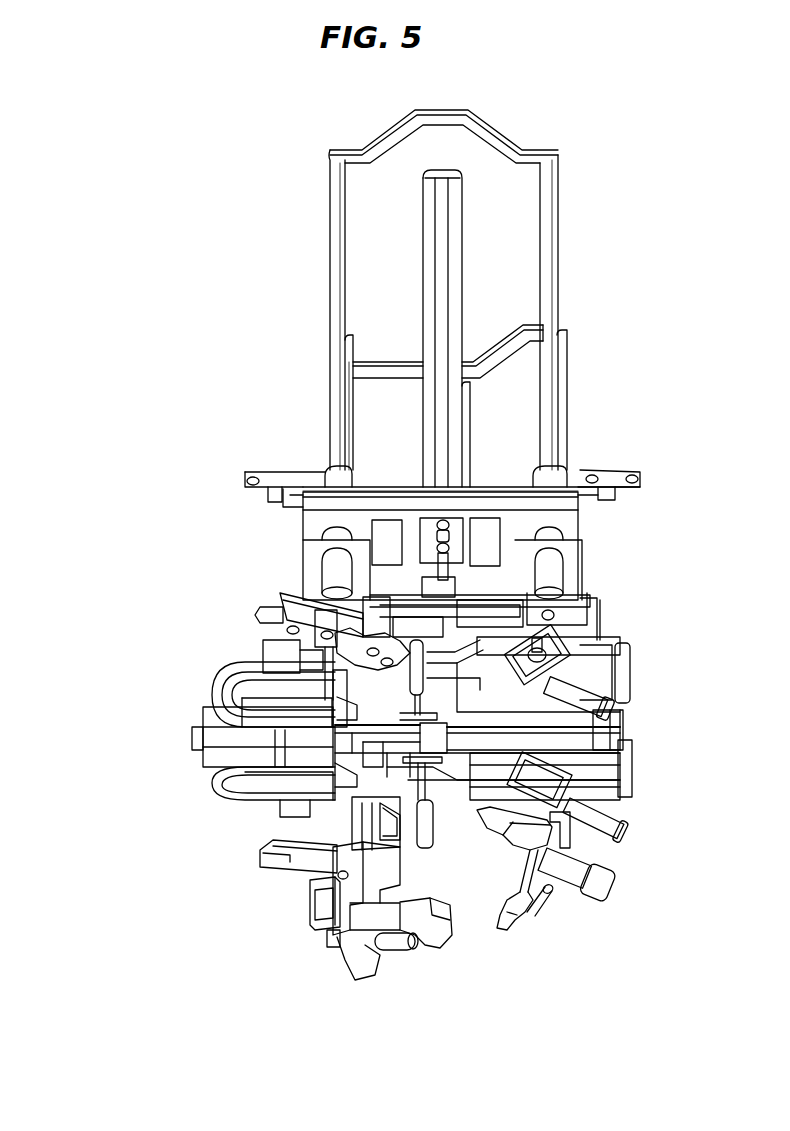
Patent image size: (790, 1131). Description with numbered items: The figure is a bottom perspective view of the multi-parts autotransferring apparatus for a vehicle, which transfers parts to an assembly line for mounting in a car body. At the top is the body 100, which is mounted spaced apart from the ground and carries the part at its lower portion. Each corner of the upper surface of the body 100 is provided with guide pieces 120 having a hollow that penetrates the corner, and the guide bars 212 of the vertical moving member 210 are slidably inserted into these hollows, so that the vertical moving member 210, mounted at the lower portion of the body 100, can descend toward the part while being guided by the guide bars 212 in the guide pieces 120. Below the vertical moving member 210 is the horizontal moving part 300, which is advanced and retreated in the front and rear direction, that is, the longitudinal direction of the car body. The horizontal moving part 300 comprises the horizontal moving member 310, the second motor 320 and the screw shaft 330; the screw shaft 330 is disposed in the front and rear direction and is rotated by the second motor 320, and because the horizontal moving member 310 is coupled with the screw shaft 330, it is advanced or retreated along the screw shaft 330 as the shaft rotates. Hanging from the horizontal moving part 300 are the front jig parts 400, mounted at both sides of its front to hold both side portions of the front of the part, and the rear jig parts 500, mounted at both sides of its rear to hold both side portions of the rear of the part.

The body 100 is at (305, 507).
The guide pieces 120 is at (338, 470).
The vertical moving member 210 is at (560, 598).
The guide bars 212 is at (335, 308).
The horizontal moving part 300 is at (104, 688).
The horizontal moving member 310 is at (233, 787).
The second motor 320 is at (230, 753).
The screw shaft 330 is at (217, 707).
The front jig parts 400 is at (530, 925).
The rear jig parts 500 is at (316, 954).